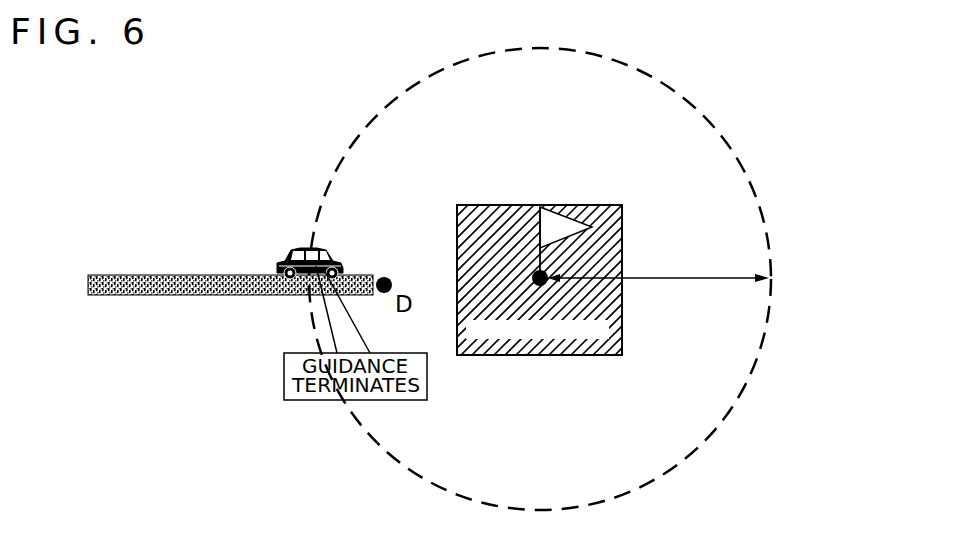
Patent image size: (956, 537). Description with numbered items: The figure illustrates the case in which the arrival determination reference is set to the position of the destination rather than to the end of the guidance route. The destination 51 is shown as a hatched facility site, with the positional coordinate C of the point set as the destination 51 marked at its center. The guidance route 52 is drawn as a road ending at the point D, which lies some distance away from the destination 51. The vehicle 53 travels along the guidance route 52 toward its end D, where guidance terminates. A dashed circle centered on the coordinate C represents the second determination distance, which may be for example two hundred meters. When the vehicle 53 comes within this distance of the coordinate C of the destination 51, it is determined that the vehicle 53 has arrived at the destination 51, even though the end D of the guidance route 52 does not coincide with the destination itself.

The destination 51 is at (602, 355).
The guidance route 52 is at (138, 286).
The vehicle 53 is at (298, 250).